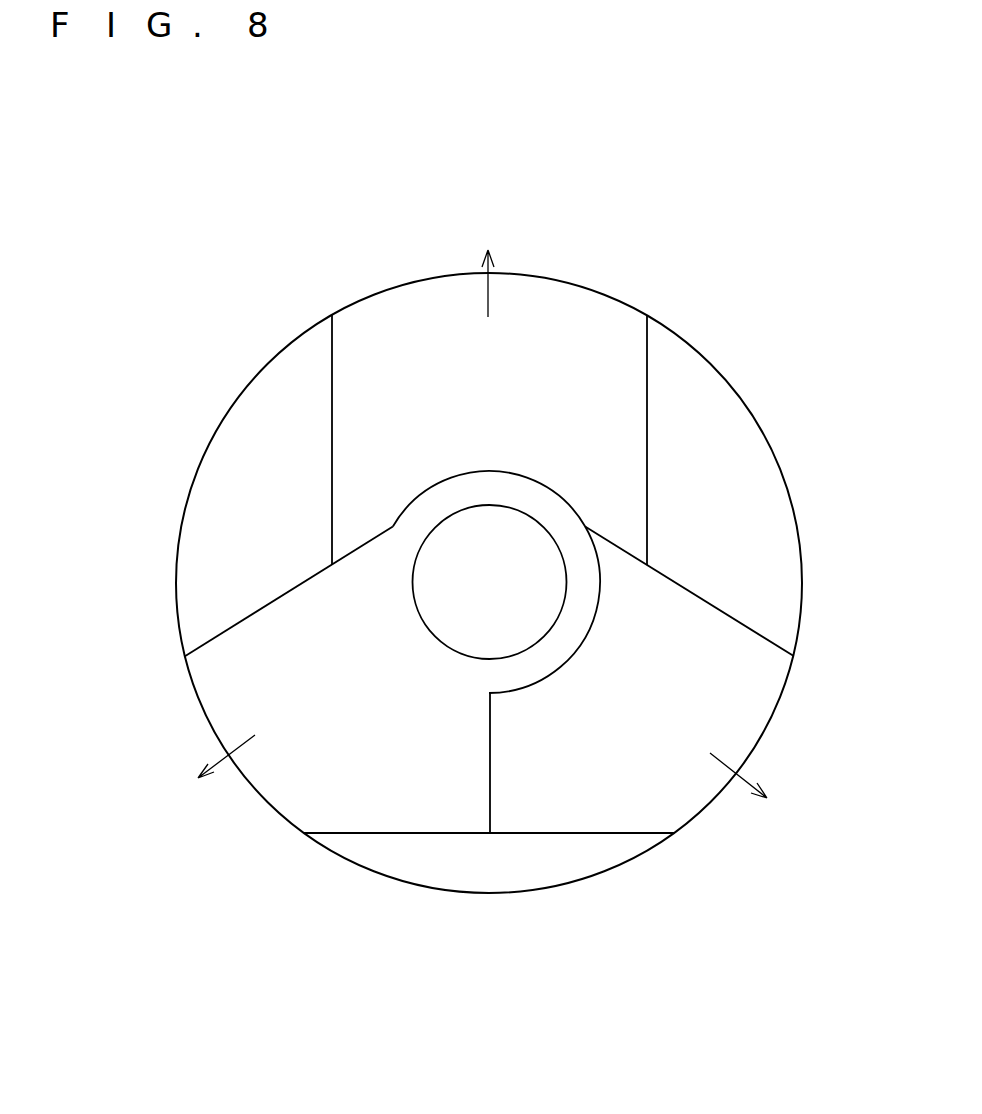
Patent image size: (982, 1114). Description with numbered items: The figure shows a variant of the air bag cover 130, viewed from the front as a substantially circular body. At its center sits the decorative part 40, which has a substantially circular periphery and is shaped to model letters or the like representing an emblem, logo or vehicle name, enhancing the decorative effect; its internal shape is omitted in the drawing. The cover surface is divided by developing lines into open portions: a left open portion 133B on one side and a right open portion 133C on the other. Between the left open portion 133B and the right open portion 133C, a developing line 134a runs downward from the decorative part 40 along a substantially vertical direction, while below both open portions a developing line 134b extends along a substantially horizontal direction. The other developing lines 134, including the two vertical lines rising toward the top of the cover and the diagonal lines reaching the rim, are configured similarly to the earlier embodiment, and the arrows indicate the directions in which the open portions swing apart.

The air bag cover 130 is at (690, 342).
The developing lines 134 is at (332, 407).
The developing line 134a is at (490, 745).
The developing line 134b is at (370, 833).
The decorative part 40 is at (433, 622).
The left open portion 133B is at (210, 683).
The right open portion 133C is at (768, 683).